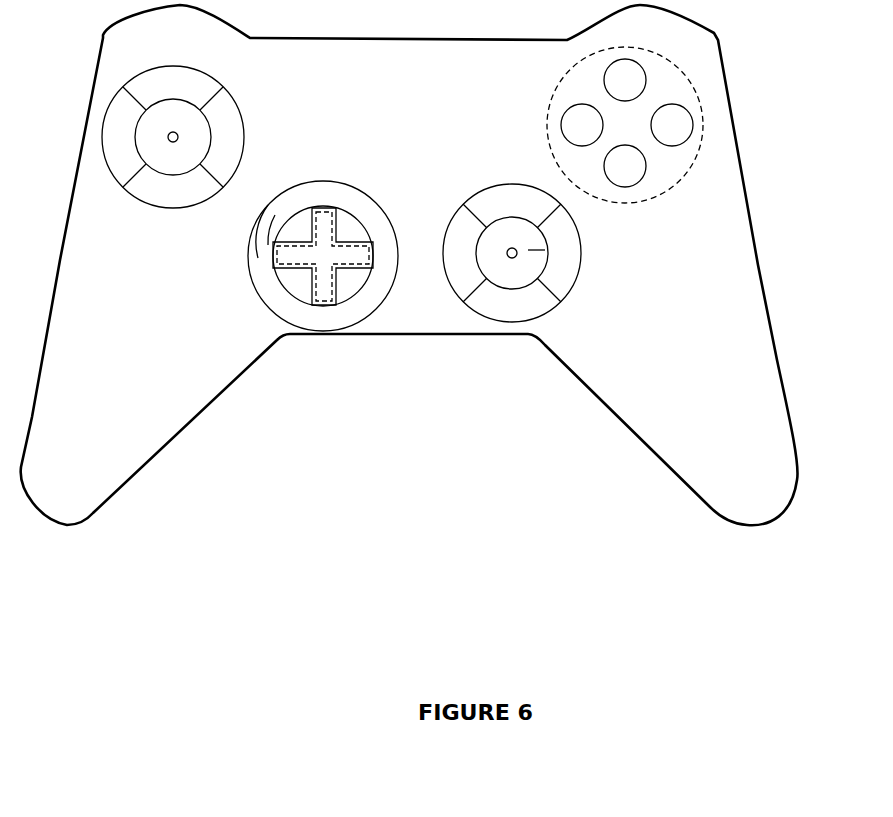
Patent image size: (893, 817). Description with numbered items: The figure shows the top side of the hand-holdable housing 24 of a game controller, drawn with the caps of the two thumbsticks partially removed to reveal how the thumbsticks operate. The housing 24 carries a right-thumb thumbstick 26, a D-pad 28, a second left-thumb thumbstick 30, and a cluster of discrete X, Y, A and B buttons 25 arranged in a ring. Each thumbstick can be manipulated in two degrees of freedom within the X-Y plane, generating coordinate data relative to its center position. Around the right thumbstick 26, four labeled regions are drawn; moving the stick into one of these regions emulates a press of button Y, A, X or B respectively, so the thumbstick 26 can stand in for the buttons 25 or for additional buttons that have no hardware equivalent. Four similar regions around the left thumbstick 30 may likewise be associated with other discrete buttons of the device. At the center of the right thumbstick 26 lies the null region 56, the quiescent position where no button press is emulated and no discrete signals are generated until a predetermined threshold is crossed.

The hand-holdable housing 24 is at (708, 380).
The X, Y, A and B buttons 25 is at (648, 98).
The right-thumb thumbstick 26 is at (512, 258).
The D-pad 28 is at (320, 245).
The second (left-thumb) thumbstick 30 is at (168, 133).
The null region 56 is at (527, 250).